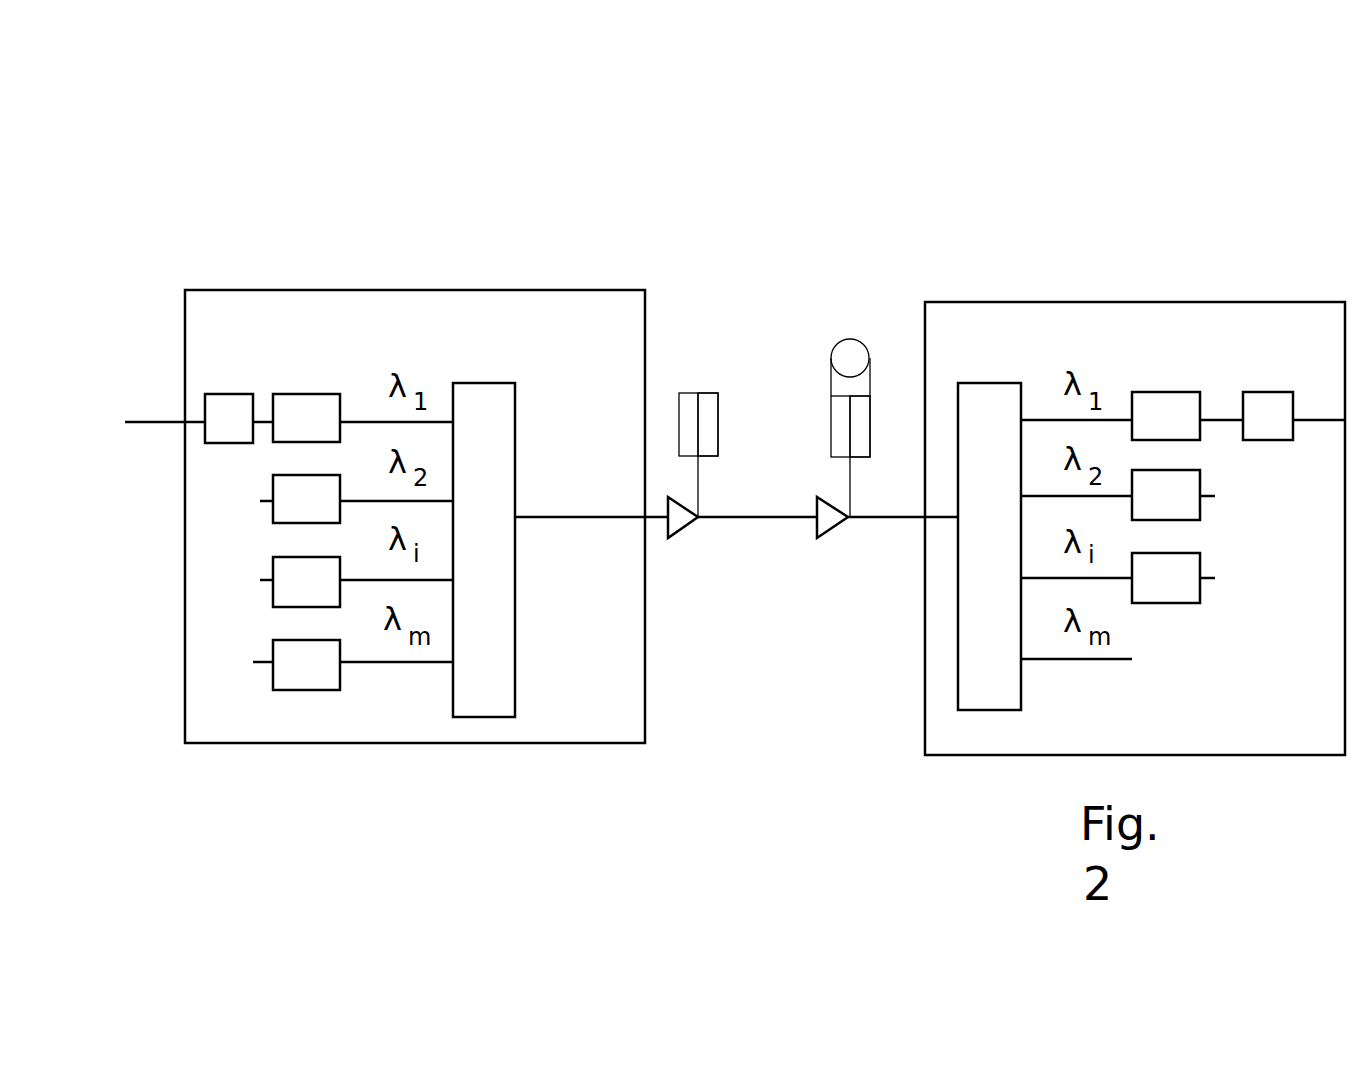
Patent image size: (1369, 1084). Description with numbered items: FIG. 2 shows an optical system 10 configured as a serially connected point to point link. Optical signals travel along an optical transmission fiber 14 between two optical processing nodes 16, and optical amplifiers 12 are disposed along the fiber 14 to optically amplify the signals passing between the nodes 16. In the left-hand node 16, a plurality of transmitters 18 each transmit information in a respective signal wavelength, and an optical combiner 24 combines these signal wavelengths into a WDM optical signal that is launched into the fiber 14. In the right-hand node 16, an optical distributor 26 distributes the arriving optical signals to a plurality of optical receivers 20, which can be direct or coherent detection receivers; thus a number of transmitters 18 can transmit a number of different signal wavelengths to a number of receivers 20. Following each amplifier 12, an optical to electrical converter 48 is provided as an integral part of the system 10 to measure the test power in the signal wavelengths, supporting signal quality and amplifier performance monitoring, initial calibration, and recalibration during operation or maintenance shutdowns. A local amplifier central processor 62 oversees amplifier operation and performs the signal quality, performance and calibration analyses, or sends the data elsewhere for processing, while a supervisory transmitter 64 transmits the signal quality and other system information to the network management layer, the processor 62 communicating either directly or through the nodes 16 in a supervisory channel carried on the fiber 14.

The optical system 10 is at (765, 153).
The optical amplifier 12 is at (380, 290).
The optical transmission fiber 14 is at (657, 520).
The optical processing node 16 is at (688, 523).
The transmitter 18 is at (308, 394).
The optical receiver 20 is at (243, 394).
The optical combiner 24 is at (488, 383).
The optical distributor 26 is at (978, 383).
The optical to electrical (O/E) converter 48 is at (678, 393).
The amplifier central processor 62 is at (852, 340).
The supervisory transmitter 64 is at (718, 456).